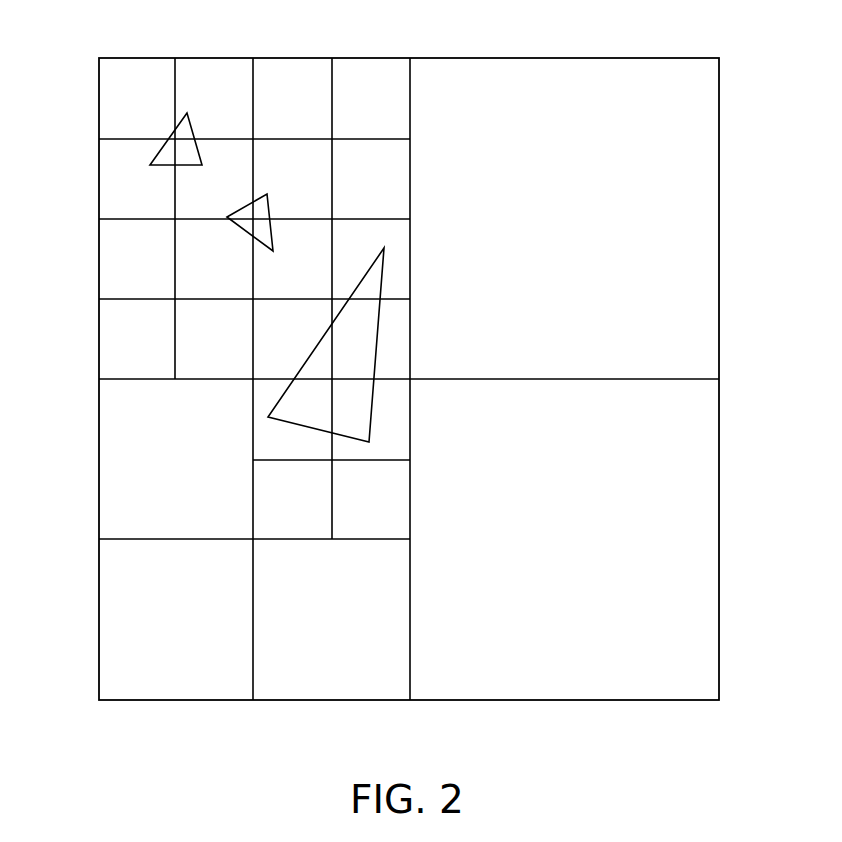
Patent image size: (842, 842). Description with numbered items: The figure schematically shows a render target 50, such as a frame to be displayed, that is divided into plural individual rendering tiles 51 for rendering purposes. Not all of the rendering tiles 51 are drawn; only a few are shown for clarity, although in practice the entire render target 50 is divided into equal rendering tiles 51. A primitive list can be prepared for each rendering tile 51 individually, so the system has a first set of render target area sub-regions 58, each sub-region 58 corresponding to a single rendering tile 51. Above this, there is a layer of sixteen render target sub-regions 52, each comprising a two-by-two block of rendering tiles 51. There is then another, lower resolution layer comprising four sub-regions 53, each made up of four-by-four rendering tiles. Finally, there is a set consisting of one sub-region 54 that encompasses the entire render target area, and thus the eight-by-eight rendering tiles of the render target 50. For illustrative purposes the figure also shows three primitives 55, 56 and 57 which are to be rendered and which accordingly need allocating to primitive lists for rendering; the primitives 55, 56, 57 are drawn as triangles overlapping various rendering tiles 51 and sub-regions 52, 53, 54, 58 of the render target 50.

The render target 50 is at (719, 58).
The rendering tile 51 is at (139, 58).
The render target sub-region 52 is at (96, 58).
The render target sub-region 53 is at (96, 380).
The render target sub-region 54 is at (99, 702).
The primitive 55 is at (312, 352).
The primitive 56 is at (193, 125).
The primitive 57 is at (268, 201).
The render target area sub-region 58 is at (331, 58).